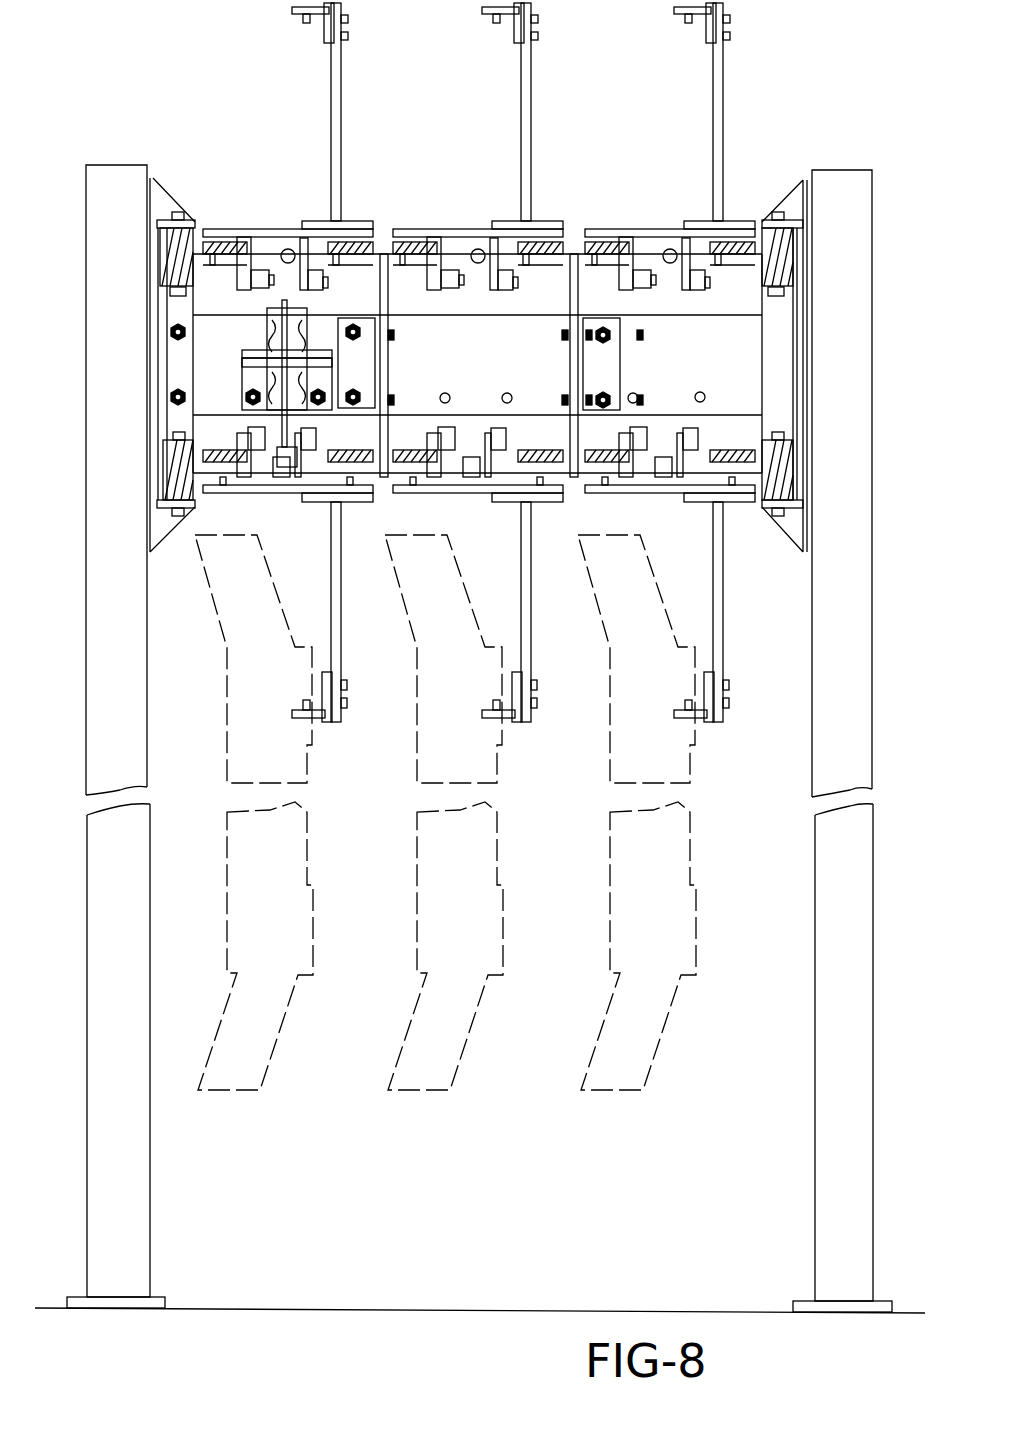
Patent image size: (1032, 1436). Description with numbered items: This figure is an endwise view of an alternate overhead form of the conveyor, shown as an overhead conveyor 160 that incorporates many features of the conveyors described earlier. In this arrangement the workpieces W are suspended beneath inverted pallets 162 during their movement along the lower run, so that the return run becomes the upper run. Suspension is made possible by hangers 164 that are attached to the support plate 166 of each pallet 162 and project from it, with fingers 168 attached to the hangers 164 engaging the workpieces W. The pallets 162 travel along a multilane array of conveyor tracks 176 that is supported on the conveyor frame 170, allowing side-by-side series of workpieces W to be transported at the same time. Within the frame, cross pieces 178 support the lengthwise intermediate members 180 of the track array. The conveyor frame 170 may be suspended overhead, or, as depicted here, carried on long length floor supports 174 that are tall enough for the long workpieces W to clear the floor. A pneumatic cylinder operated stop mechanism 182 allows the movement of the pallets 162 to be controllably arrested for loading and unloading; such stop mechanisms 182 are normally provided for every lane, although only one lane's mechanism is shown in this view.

The overhead conveyor 160 is at (180, 100).
The pallet 162 is at (224, 226).
The hanger 164 is at (343, 100).
The support plate 166 is at (283, 497).
The finger 168 is at (300, 705).
The conveyor frame 170 is at (157, 448).
The floor support 174 is at (85, 1025).
The conveyor track 176 is at (265, 337).
The cross piece 178 is at (241, 372).
The lengthwise intermediate member 180 is at (395, 364).
The stop mechanism 182 is at (196, 352).
The workpiece W is at (226, 720).